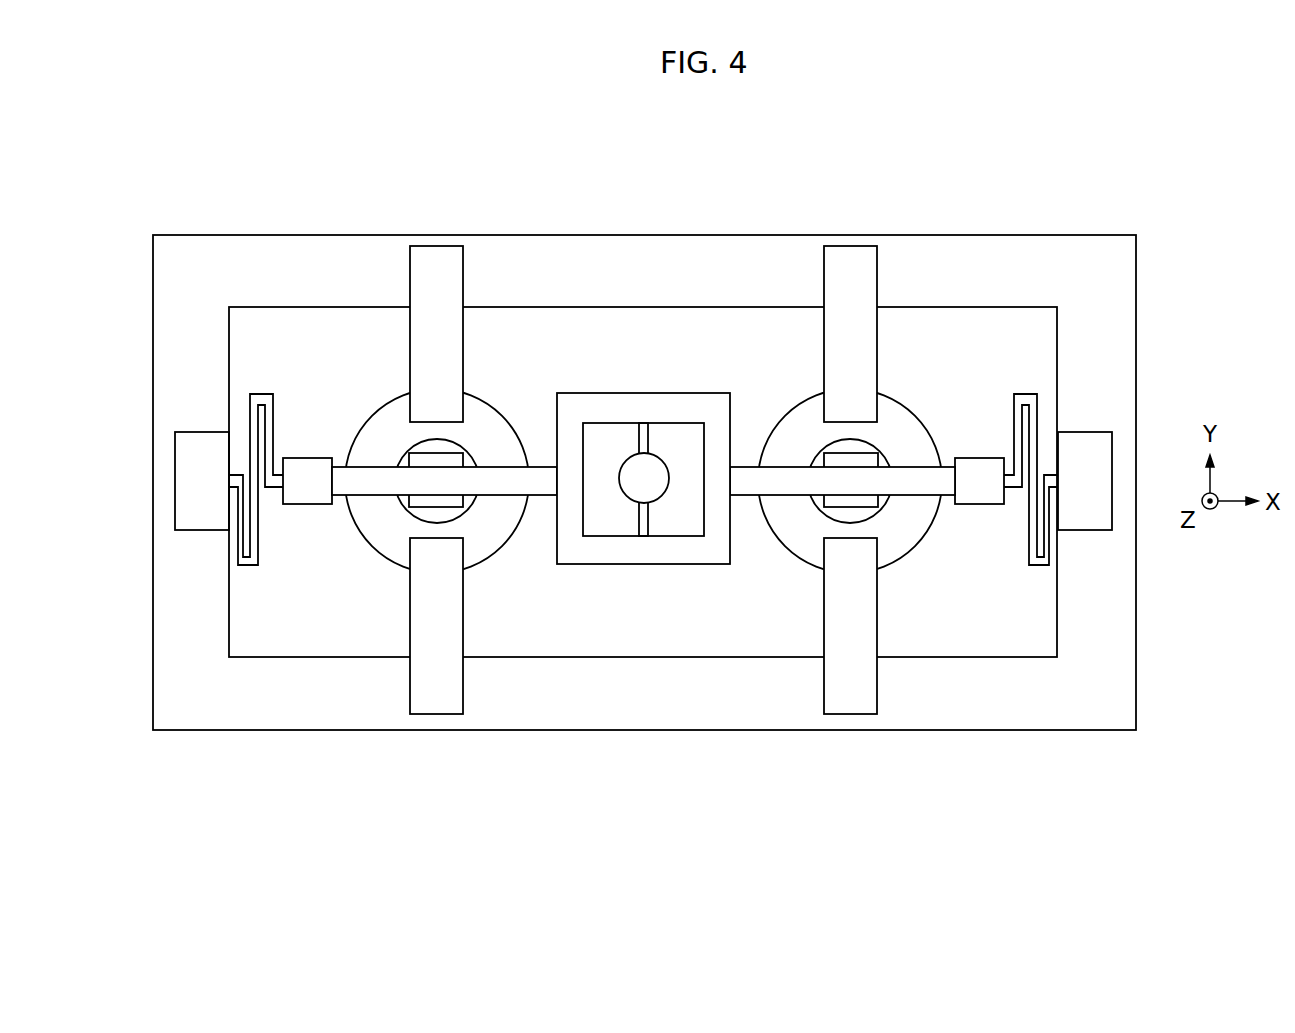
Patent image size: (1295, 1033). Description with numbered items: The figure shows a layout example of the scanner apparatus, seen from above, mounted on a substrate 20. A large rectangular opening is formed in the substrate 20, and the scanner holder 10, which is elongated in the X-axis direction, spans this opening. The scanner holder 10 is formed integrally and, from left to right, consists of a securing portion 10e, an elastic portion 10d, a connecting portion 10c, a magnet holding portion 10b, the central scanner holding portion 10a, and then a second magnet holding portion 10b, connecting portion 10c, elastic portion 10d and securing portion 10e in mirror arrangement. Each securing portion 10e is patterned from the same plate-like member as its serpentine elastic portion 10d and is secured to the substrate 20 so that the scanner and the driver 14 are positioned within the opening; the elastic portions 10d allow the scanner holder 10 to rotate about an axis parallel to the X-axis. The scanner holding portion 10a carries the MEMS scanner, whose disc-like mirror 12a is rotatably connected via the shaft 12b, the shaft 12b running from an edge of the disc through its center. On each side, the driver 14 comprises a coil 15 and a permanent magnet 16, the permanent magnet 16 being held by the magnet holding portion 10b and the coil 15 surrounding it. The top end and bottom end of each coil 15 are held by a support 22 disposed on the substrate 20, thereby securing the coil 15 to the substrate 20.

The scanner holder 10 is at (1120, 183).
The scanner holding portion 10a is at (635, 393).
The magnet holding portion 10b is at (512, 478).
The connecting portion 10c is at (321, 468).
The elastic portion 10d is at (263, 390).
The securing portion 10e is at (197, 457).
The mirror 12a is at (642, 487).
The shaft 12b is at (645, 522).
The driver 14 is at (643, 603).
The coil 15 is at (368, 518).
The permanent magnet 16 is at (421, 498).
The substrate 20 is at (1118, 593).
The support 22 is at (436, 272).